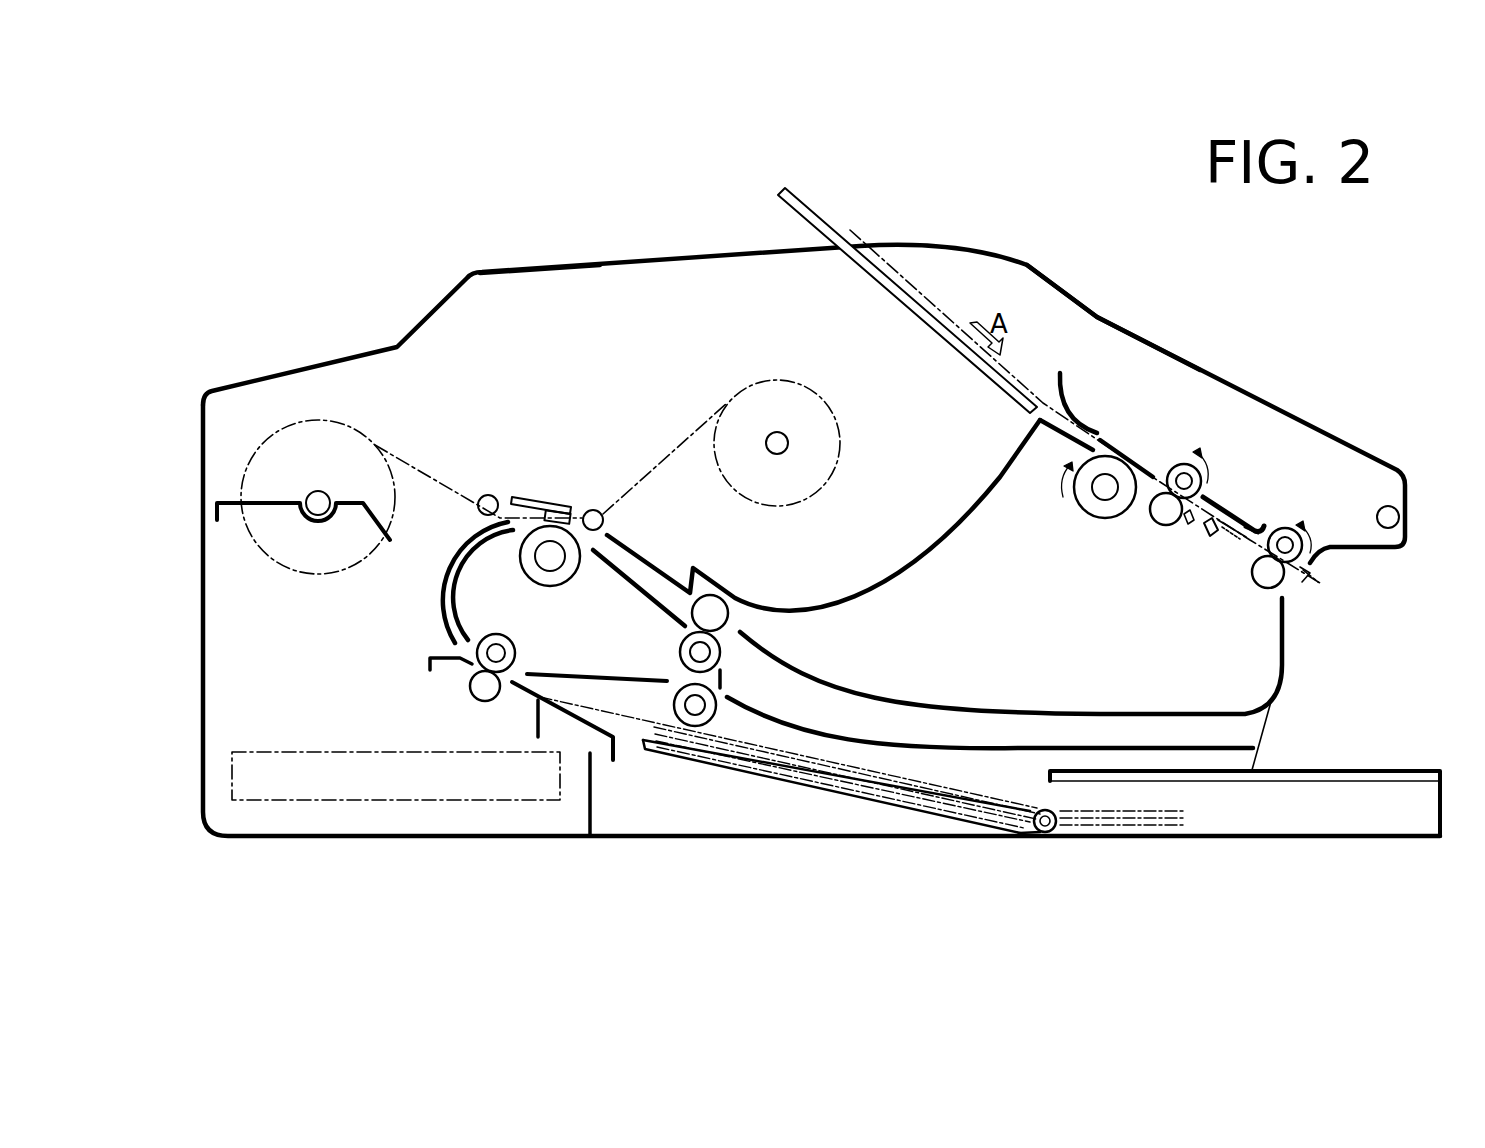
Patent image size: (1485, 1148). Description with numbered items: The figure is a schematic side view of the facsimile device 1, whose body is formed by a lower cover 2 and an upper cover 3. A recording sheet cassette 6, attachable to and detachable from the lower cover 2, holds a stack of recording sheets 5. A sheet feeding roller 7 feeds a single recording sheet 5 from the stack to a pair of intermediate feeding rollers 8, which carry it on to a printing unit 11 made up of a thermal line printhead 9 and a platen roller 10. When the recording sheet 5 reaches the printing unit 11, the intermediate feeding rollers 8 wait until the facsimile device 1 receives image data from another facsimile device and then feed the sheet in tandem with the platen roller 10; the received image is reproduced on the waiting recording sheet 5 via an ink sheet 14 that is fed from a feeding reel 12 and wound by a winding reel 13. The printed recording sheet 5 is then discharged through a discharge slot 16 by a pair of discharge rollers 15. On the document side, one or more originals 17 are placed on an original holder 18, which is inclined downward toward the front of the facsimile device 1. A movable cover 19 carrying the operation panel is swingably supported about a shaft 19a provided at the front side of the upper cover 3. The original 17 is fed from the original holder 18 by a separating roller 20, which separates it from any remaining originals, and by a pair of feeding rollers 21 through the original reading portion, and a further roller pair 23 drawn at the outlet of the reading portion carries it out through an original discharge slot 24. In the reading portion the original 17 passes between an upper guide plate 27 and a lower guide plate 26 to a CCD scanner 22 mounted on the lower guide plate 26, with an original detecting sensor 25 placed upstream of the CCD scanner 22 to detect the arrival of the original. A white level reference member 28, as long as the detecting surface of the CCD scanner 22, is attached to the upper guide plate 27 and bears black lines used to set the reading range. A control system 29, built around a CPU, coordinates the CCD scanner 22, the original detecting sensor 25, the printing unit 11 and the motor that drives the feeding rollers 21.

The facsimile device 1 is at (660, 246).
The lower cover 2 is at (203, 662).
The upper cover 3 is at (520, 267).
The recording sheet 5 is at (797, 763).
The recording sheet cassette 6 is at (1243, 827).
The sheet feeding roller 7 is at (692, 722).
The intermediate feeding rollers 8 is at (498, 673).
The thermal line printhead 9 is at (564, 508).
The platen roller 10 is at (550, 562).
The printing unit 11 is at (508, 486).
The feeding reel 12 is at (310, 540).
The winding reel 13 is at (790, 443).
The ink sheet 14 is at (658, 470).
The discharge rollers 15 is at (715, 612).
The discharge slot 16 is at (1233, 728).
The original 17 is at (900, 273).
The original holder 18 is at (813, 210).
The movable cover 19 is at (1093, 313).
The shaft 19a is at (1400, 517).
The separating roller 20 is at (1090, 500).
The feeding rollers 21 is at (1164, 505).
The CCD scanner 22 is at (1207, 537).
The document discharge roller 23 is at (1285, 565).
The original discharge slot 24 is at (1317, 575).
The original detecting sensor 25 is at (1183, 530).
The lower guide plate 26 is at (1243, 540).
The upper guide plate 27 is at (1257, 525).
The white level reference member 28 is at (1216, 507).
The control system 29 is at (425, 802).